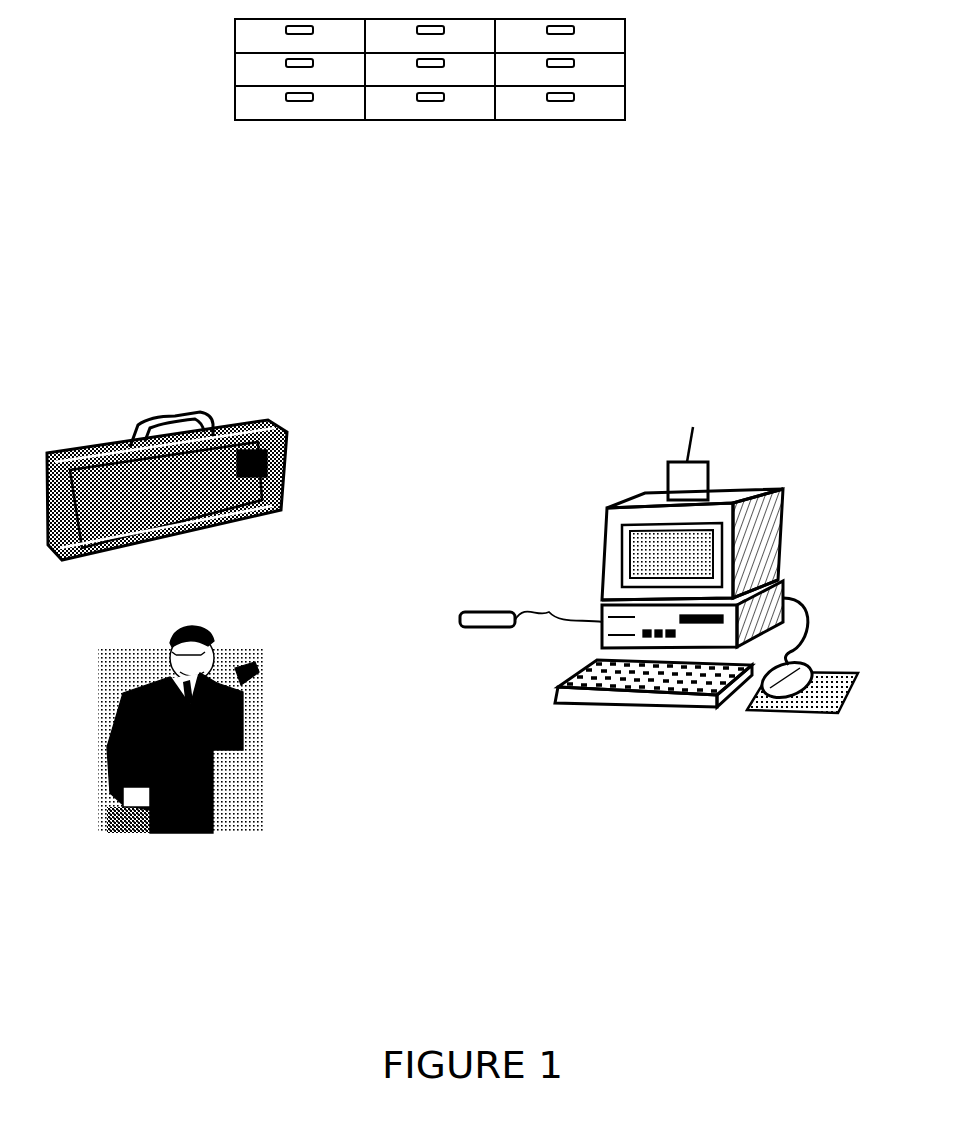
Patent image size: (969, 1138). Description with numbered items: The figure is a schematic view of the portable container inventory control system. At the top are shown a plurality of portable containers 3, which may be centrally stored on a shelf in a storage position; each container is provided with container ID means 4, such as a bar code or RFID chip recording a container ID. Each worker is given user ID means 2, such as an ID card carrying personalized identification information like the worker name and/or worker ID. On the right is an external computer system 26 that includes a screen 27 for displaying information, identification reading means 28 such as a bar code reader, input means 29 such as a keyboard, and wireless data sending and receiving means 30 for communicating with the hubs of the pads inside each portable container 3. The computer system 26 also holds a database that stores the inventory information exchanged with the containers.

The user ID means 2 is at (250, 682).
The portable container 3 is at (336, 289).
The container ID means 4 is at (253, 433).
The external computer system 26 is at (786, 579).
The screen 27 is at (665, 547).
The identification reading means 28 is at (483, 605).
The input means 29 is at (603, 706).
The wireless data sending and receiving means 30 is at (698, 476).